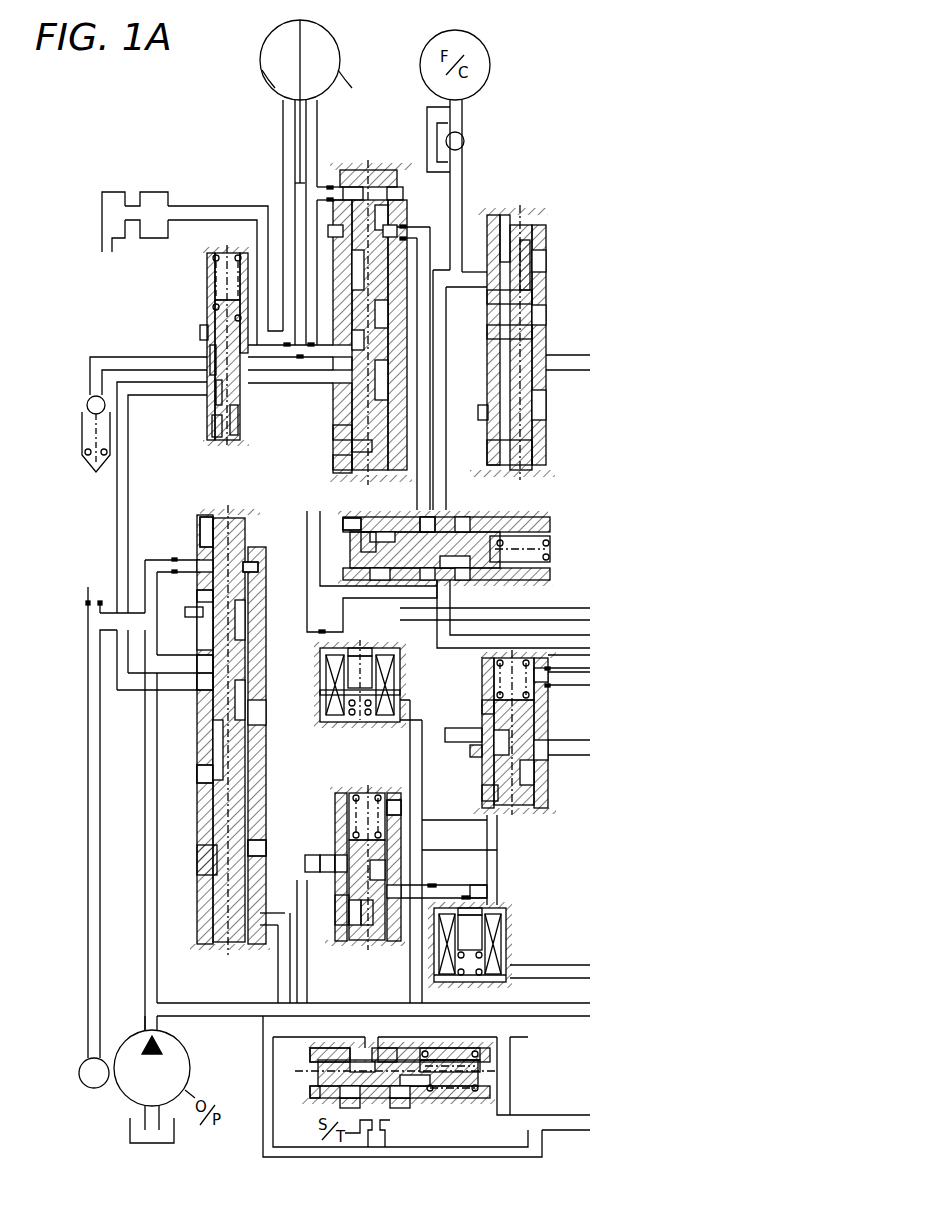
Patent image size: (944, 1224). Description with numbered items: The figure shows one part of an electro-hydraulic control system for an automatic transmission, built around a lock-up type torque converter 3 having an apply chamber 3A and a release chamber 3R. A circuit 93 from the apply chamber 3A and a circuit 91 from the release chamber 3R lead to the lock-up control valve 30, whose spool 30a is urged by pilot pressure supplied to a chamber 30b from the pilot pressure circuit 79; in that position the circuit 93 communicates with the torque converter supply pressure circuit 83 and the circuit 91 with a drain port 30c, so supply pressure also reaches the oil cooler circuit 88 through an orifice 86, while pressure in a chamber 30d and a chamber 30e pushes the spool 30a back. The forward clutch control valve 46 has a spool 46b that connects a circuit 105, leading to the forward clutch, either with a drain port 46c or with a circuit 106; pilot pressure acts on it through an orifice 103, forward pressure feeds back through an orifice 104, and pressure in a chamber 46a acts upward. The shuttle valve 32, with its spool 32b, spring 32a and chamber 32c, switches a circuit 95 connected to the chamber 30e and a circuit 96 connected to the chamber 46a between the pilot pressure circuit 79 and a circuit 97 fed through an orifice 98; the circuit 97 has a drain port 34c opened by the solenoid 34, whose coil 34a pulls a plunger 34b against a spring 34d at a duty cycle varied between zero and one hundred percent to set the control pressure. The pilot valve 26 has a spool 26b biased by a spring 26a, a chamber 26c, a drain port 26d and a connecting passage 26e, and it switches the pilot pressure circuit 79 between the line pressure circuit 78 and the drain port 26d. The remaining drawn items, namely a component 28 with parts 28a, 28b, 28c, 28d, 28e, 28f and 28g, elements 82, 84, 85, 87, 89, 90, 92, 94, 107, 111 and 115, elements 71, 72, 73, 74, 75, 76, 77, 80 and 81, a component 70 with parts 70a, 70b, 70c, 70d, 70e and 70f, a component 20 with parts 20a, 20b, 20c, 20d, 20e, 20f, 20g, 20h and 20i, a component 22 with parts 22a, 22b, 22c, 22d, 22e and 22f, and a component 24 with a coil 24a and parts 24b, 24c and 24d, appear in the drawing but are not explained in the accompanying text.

The torque converter 3 is at (268, 45).
The release chamber 3R is at (262, 85).
The apply chamber 3A is at (345, 78).
The circuit 91 is at (283, 158).
The circuit 93 is at (318, 112).
The port 92 is at (322, 186).
The orifice 103 is at (470, 268).
The check valve 107 is at (470, 135).
The filter 90 is at (100, 205).
The orifice 89 is at (168, 205).
The oil cooler circuit 88 is at (232, 206).
The shift valve 28 is at (195, 420).
The spring chamber 28a is at (214, 256).
The spool 28b is at (212, 305).
The port 28e is at (200, 328).
The port 28c is at (210, 358).
The port 28d is at (216, 395).
The port 28f is at (212, 430).
The port 28g is at (238, 430).
The torque converter supply pressure circuit 83 is at (298, 372).
The pipe 87 is at (268, 385).
The port 85 is at (285, 340).
The orifice 86 is at (311, 360).
The relief valve 82 is at (86, 380).
The pipe 84 is at (117, 530).
The pipe 73 is at (102, 598).
The pipe 74 is at (100, 856).
The pipe 71 is at (145, 818).
The pipe 72 is at (172, 554).
The strainer 75 is at (110, 1058).
The lock-up control valve 30 is at (352, 158).
The chamber 30e is at (358, 178).
The chamber 30b is at (403, 194).
The pipe 94 is at (410, 230).
The drain port 30c is at (333, 432).
The spool 30a is at (352, 448).
The chamber 30d is at (333, 465).
The forward clutch control valve 46 is at (498, 200).
The spool 46b is at (532, 260).
The circuit 105 is at (530, 297).
The orifice 104 is at (530, 332).
The circuit 106 is at (572, 373).
The drain port 46c is at (478, 412).
The chamber 46a is at (520, 462).
The circuit 96 is at (470, 498).
The shuttle valve 32 is at (498, 520).
The spring 32a is at (540, 565).
The spool 32b is at (345, 528).
The chamber 32c is at (361, 540).
The circuit 95 is at (420, 516).
The pipe 115 is at (510, 608).
The orifice 98 is at (372, 572).
The circuit 97 is at (450, 633).
The solenoid 34 is at (340, 728).
The coil 34a is at (400, 670).
The drain port 34c is at (400, 655).
The plunger 34b is at (356, 680).
The spring 34d is at (320, 710).
The valve 70 is at (548, 820).
The spring 70a is at (492, 672).
The port 70b is at (482, 706).
The port 70f is at (530, 686).
The pipe 111 is at (572, 740).
The port 70d is at (470, 745).
The port 70e is at (470, 752).
The port 70c is at (482, 798).
The line pressure circuit 78 is at (432, 706).
The pilot pressure circuit 79 is at (390, 1115).
The pipe 80 is at (465, 880).
The pipe 81 is at (497, 855).
The manual valve 20 is at (195, 515).
The port 20b is at (200, 530).
The port 20d is at (260, 565).
The port 20g is at (197, 596).
The port 20f is at (200, 625).
The port 20e is at (200, 670).
The port 20h is at (202, 690).
The port 20a is at (200, 772).
The port 20c is at (200, 852).
The port 20i is at (262, 835).
The pipe 76 is at (278, 945).
The pipe 77 is at (278, 985).
The valve 22 is at (358, 950).
The spring 22b is at (350, 800).
The port 22a is at (392, 795).
The port 22e is at (330, 855).
The port 22c is at (320, 860).
The port 22d is at (345, 905).
The port 22f is at (368, 930).
The solenoid valve 24 is at (510, 908).
The coil 24a is at (505, 943).
The port 24c is at (512, 918).
The plunger 24b is at (470, 945).
The port 24d is at (485, 968).
The pilot valve 26 is at (420, 1108).
The connecting passage 26e is at (322, 1048).
The drain port 26d is at (395, 1048).
The spool 26b is at (430, 1060).
The spring 26a is at (470, 1048).
The chamber 26c is at (300, 1100).